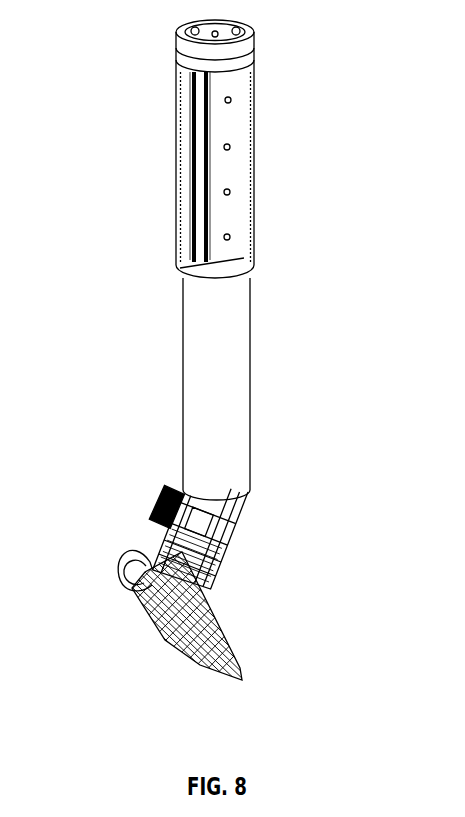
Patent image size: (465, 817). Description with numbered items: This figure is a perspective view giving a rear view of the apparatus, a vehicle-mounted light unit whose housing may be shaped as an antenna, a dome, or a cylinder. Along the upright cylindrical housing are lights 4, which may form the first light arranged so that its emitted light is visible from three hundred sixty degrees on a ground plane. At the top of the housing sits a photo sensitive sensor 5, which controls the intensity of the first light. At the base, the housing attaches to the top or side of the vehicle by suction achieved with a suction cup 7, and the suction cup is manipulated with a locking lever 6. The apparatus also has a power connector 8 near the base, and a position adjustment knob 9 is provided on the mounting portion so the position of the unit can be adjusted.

The lights 4 is at (232, 188).
The photo sensitive sensor 5 is at (217, 33).
The locking lever 6 is at (135, 549).
The suction cup 7 is at (152, 663).
The power connector 8 is at (167, 627).
The position adjustment knob 9 is at (164, 494).